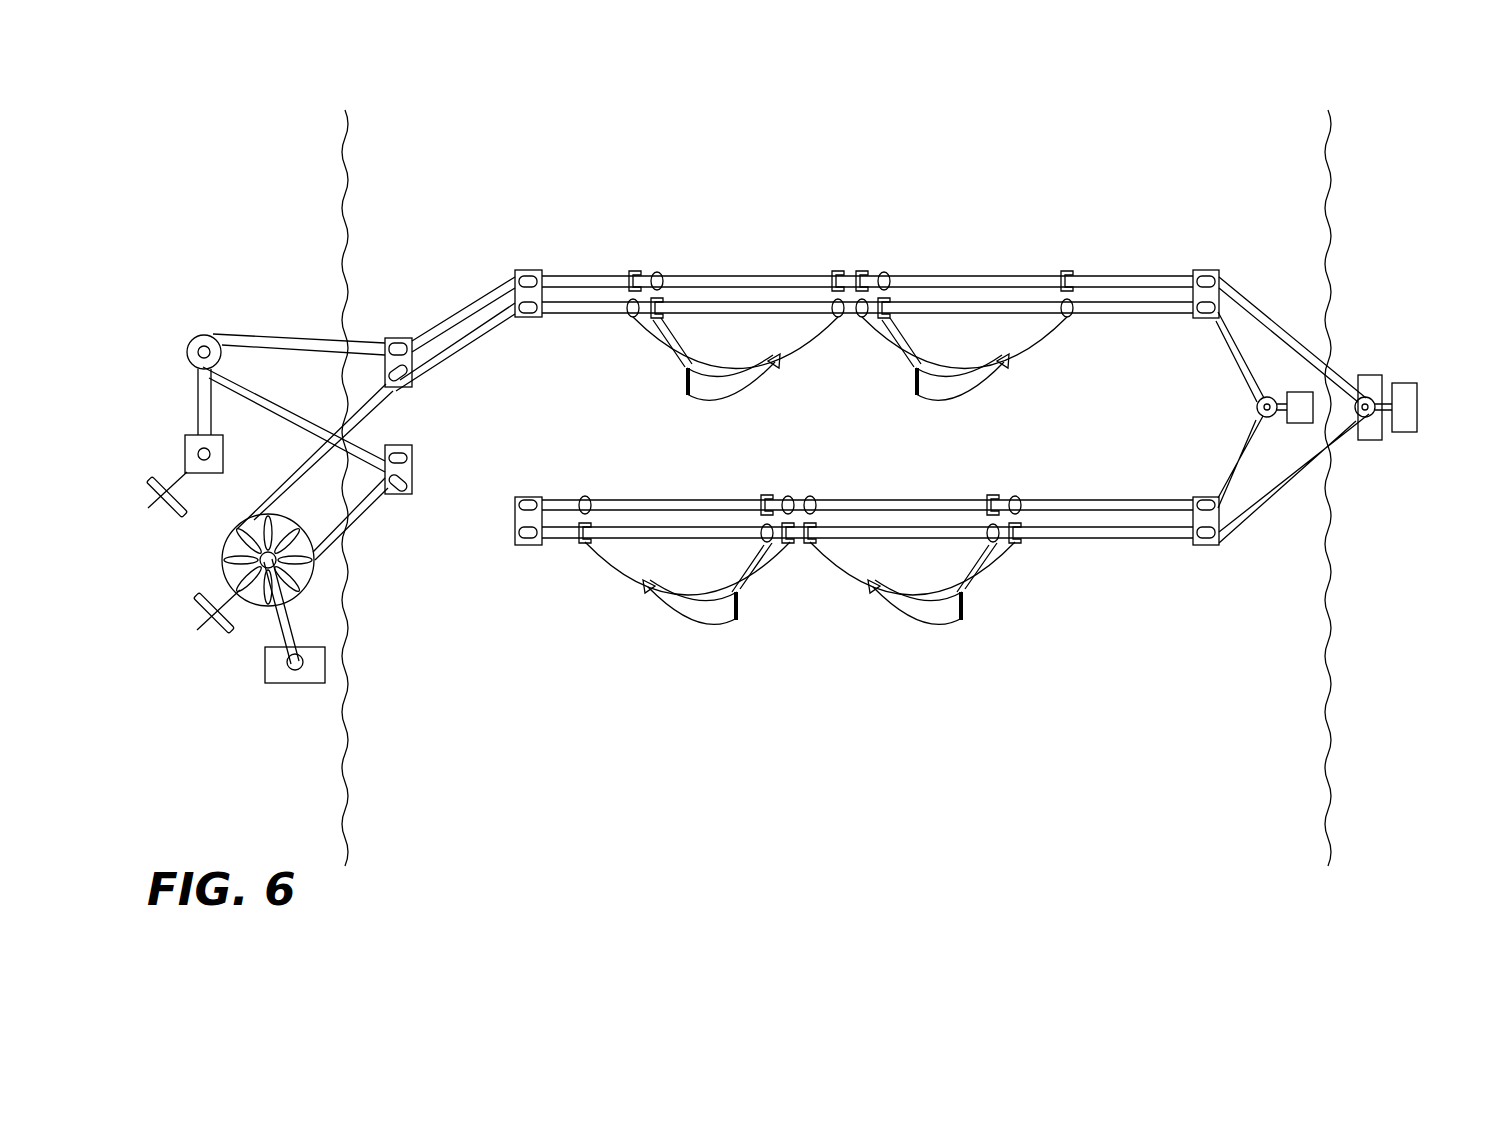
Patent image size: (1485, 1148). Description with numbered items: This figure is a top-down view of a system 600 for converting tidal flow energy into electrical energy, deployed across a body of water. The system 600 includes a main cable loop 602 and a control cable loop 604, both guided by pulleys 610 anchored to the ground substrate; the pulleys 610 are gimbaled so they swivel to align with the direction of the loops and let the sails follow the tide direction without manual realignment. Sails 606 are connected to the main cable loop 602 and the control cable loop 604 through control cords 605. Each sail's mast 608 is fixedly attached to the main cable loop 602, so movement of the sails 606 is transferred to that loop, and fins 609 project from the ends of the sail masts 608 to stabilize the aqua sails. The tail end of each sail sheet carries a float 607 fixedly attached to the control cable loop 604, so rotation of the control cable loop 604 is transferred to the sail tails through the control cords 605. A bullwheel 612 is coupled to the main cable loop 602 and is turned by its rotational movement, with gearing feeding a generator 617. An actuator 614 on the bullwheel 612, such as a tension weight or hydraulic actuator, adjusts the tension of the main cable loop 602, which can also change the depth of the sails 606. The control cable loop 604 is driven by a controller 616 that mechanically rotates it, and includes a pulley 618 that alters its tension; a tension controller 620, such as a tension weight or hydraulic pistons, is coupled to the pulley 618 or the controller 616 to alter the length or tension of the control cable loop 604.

The system 600 is at (787, 478).
The main cable loop 602 is at (487, 347).
The control cable loop 604 is at (1110, 265).
The control cords 605 is at (790, 350).
The sails 606 is at (745, 372).
The float 607 is at (775, 362).
The sail masts 608 is at (680, 357).
The fins 609 is at (692, 392).
The pulleys 610 is at (395, 338).
The bullwheel 612 is at (312, 583).
The actuator 614 is at (225, 632).
The controller 616 is at (192, 434).
The generator 617 is at (312, 683).
The pulley 618 is at (1383, 378).
The tension controller 620 is at (170, 490).